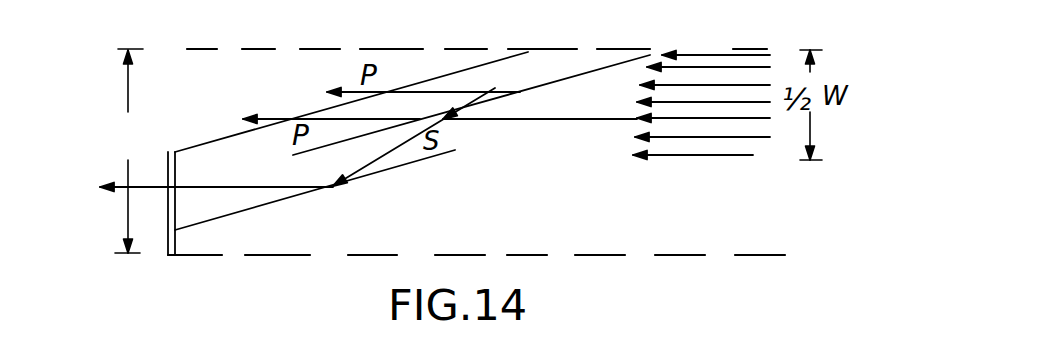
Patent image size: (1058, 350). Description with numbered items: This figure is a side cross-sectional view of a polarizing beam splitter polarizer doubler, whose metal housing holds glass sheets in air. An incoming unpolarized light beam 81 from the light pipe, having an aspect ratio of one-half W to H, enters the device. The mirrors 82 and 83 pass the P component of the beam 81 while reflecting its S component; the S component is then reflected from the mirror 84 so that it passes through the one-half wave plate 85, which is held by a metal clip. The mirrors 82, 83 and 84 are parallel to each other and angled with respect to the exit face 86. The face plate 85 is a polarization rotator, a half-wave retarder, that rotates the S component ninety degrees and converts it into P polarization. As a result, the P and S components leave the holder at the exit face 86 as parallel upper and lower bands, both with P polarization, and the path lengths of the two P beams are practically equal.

The incoming unpolarized light beam 81 is at (660, 157).
The mirror 82 is at (418, 85).
The mirror 83 is at (504, 95).
The mirror 84 is at (272, 202).
The one-half wave plate 85 is at (167, 207).
The exit face 86 is at (165, 87).